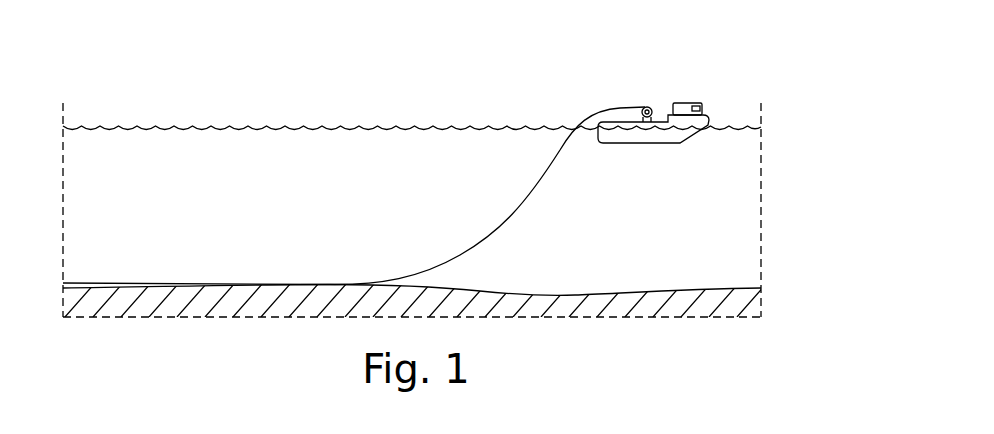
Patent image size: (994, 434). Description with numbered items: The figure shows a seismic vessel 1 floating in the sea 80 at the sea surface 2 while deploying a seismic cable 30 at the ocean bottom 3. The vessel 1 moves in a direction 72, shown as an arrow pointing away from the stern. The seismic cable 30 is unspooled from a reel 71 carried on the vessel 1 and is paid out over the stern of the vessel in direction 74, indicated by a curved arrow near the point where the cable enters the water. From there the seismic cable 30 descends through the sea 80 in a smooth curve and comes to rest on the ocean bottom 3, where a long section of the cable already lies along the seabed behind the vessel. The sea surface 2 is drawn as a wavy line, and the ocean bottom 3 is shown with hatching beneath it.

The seismic vessel 1 is at (672, 90).
The sea surface 2 is at (178, 128).
The ocean bottom 3 is at (603, 292).
The seismic cable 30 is at (500, 233).
The reel 71 is at (648, 107).
The direction 72 is at (710, 120).
The direction 74 is at (603, 99).
The sea 80 is at (267, 225).